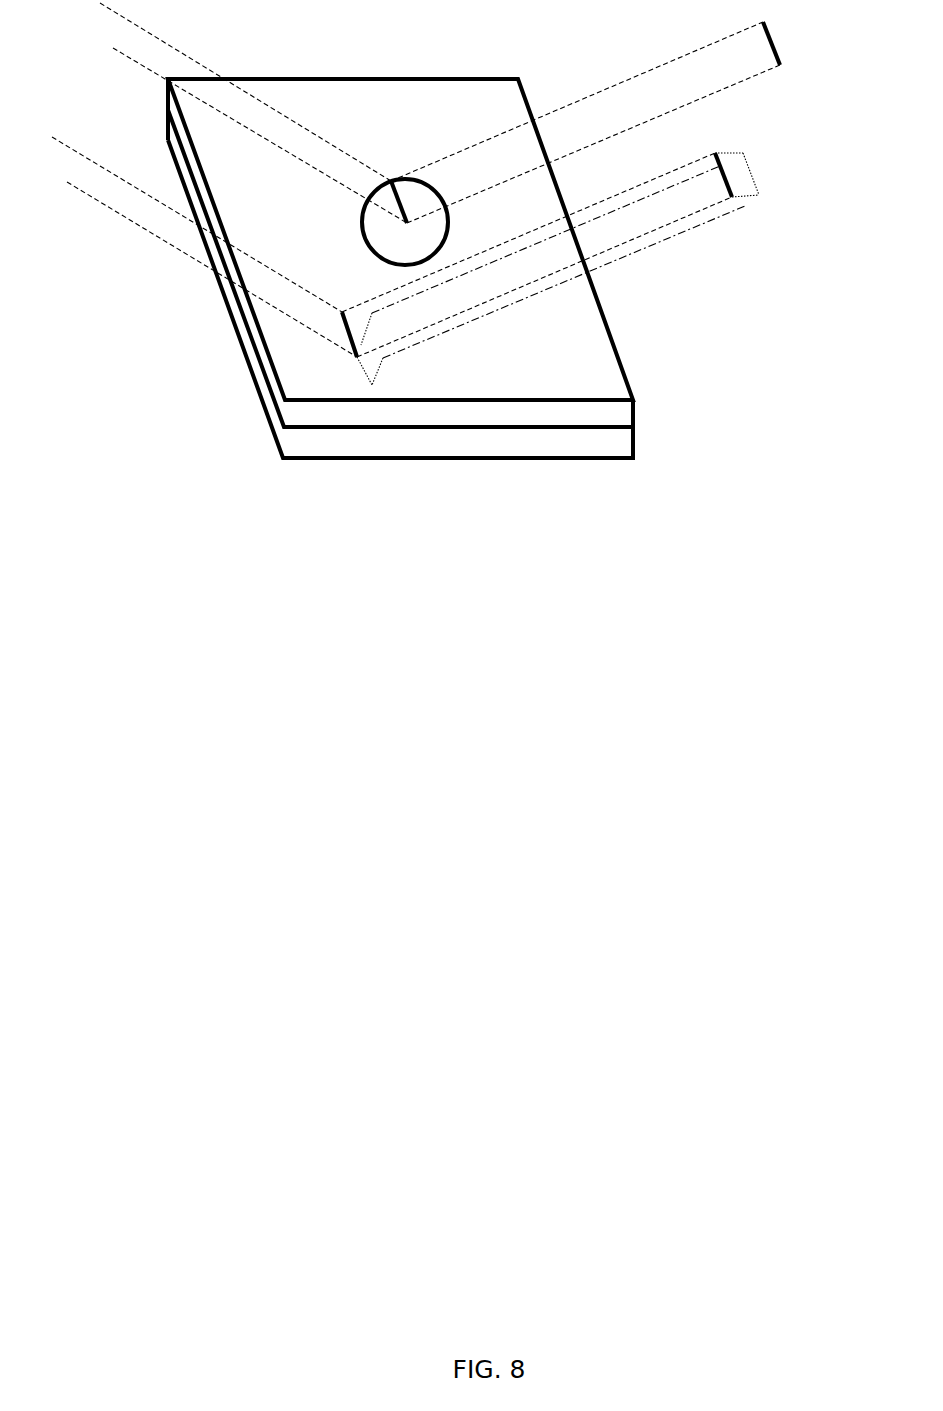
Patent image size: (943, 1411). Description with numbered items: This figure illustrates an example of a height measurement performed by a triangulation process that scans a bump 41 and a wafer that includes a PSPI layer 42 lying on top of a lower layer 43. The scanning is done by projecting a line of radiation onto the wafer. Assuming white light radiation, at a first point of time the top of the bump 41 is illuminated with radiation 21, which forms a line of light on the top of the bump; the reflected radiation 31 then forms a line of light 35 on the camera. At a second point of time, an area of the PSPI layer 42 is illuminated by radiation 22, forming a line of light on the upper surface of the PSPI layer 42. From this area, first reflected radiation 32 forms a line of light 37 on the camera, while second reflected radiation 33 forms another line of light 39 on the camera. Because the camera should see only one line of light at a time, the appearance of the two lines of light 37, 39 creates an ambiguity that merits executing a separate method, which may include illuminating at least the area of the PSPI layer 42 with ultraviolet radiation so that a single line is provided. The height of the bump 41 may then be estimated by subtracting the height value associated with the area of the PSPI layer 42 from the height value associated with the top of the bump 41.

The radiation 21 is at (249, 113).
The radiation 22 is at (204, 247).
The reflected radiation 31 is at (585, 122).
The first reflected radiation 32 is at (642, 165).
The second reflected radiation 33 is at (728, 210).
The line of light 35 is at (780, 60).
The line of light 37 is at (716, 151).
The line of light 39 is at (751, 175).
The bump 41 is at (362, 230).
The PSPI layer 42 is at (403, 78).
The lower layer 43 is at (167, 128).